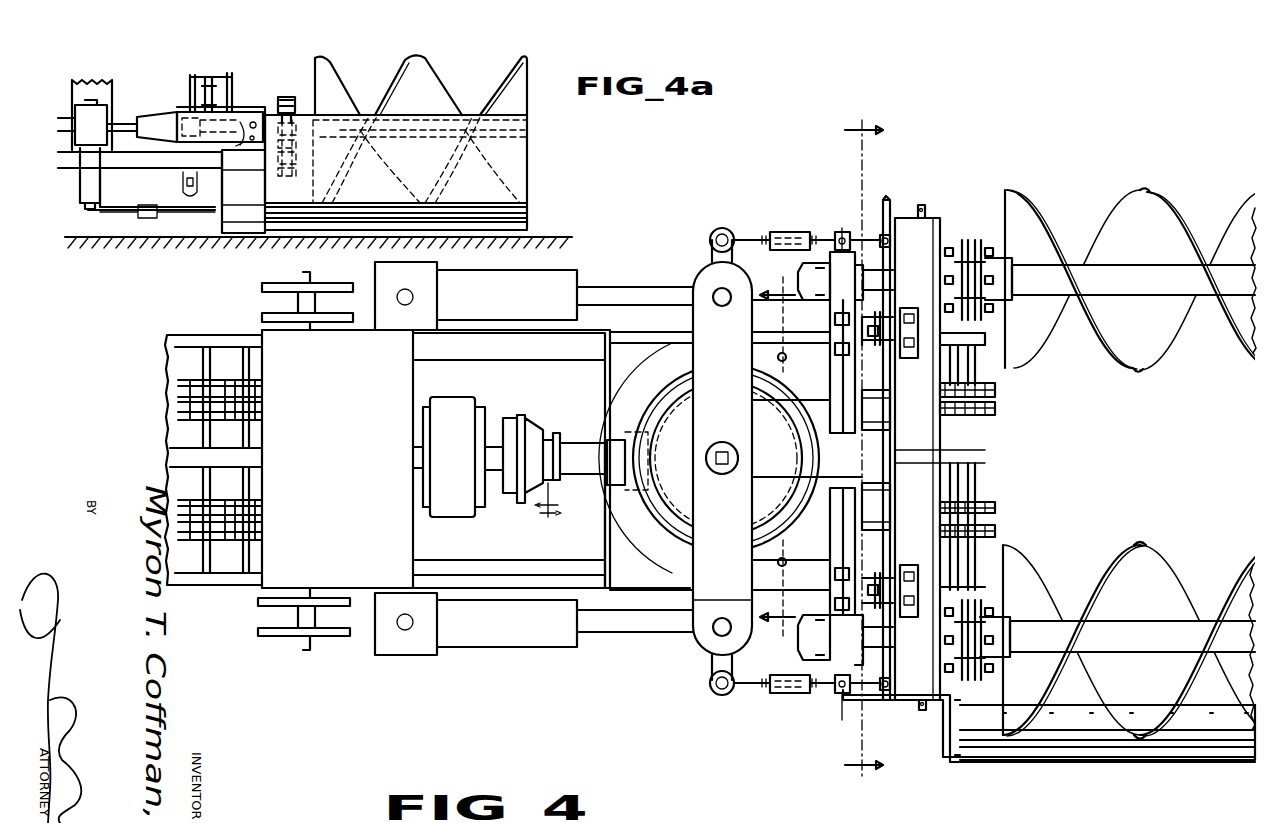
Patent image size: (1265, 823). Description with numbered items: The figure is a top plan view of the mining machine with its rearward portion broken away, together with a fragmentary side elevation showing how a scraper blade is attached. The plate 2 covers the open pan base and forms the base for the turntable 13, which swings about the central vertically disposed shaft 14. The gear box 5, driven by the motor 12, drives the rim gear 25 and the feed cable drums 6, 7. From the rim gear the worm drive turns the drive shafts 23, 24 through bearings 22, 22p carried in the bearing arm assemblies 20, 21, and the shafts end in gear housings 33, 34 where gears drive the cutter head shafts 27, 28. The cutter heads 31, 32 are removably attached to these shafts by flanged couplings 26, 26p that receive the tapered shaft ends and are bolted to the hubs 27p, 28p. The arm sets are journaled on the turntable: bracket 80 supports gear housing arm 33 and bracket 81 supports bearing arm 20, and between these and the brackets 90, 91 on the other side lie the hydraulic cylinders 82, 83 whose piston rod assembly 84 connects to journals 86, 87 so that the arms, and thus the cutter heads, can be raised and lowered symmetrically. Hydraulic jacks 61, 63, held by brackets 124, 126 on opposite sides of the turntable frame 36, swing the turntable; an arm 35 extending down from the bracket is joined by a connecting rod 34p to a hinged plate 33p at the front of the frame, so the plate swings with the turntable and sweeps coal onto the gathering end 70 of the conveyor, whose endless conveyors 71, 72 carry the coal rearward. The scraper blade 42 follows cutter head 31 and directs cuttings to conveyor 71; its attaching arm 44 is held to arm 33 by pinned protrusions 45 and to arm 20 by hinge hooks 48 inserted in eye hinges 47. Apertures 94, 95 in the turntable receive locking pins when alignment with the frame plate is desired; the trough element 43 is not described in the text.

In FIG. 4, the plate 2 is at (638, 567).
In FIG. 4, the gear box 5 is at (321, 485).
In FIG. 4, the feed cable drum 6 is at (298, 630).
In FIG. 4, the feed cable drum 7 is at (268, 316).
In FIG. 4, the motor 12 is at (454, 467).
In FIG. 4A, the turntable 13 is at (137, 160).
In FIG. 4, the turntable 13 is at (677, 558).
In FIG. 4, the central vertically disposed shaft 14 is at (773, 454).
In FIG. 4A, the bearing arm assembly 20 is at (180, 98).
In FIG. 4, the bearing arm assembly 20 is at (830, 490).
In FIG. 4, the bearing arm assembly 21 is at (840, 368).
In FIG. 4, the bearing 22 is at (870, 495).
In FIG. 4, the bearing 22p is at (868, 432).
In FIG. 4, the drive shaft 23 is at (836, 510).
In FIG. 4, the drive shaft 24 is at (810, 418).
In FIG. 4, the rim gear 25 is at (672, 522).
In FIG. 4, the flanged coupling 26 is at (1002, 630).
In FIG. 4, the flanged coupling 26p is at (1005, 262).
In FIG. 4, the cutter head shaft 27 is at (880, 640).
In FIG. 4, the hub 27p is at (965, 625).
In FIG. 4, the cutter head shaft 28 is at (880, 282).
In FIG. 4, the hub 28p is at (960, 245).
In FIG. 4A, the cutter head 31 is at (446, 80).
In FIG. 4, the cutter head 31 is at (1137, 540).
In FIG. 4, the cutter head 32 is at (1138, 362).
In FIG. 4A, the gear housing arm 33 is at (276, 97).
In FIG. 4, the gear housing arm 33 is at (925, 486).
In FIG. 4, the hinged plate 33p is at (885, 218).
In FIG. 4, the gear housing arm 34 is at (930, 224).
In FIG. 4, the connecting rod 34p is at (750, 692).
In FIG. 4A, the arm 35 is at (86, 180).
In FIG. 4, the arm 35 is at (710, 690).
In FIG. 4A, the frame 36 is at (82, 90).
In FIG. 4, the frame 36 is at (735, 392).
In FIG. 4A, the scraper blade 42 is at (527, 165).
In FIG. 4A, the trough plate 43 is at (530, 224).
In FIG. 4, the trough plate 43 is at (1053, 710).
In FIG. 4A, the attaching arm 44 is at (205, 140).
In FIG. 4, the attaching arm 44 is at (942, 740).
In FIG. 4A, the protrusion 45 is at (247, 135).
In FIG. 4, the protrusion 45 is at (922, 205).
In FIG. 4A, the eye hinge 47 is at (168, 118).
In FIG. 4, the eye hinge 47 is at (828, 695).
In FIG. 4, the hinge hook 48 is at (1100, 742).
In FIG. 4, the hydraulic jack 61 is at (553, 644).
In FIG. 4, the hydraulic jack 63 is at (583, 303).
In FIG. 4, the gathering end of the conveyor 70 is at (1044, 448).
In FIG. 4, the endless conveyor 71 is at (998, 526).
In FIG. 4, the endless conveyor 72 is at (998, 400).
In FIG. 4A, the bracket 80 is at (240, 108).
In FIG. 4, the bracket 80 is at (909, 565).
In FIG. 4A, the bracket 81 is at (193, 75).
In FIG. 4, the bracket 81 is at (838, 588).
In FIG. 4, the hydraulic cylinder 82 is at (865, 585).
In FIG. 4, the hydraulic cylinder 83 is at (866, 342).
In FIG. 4A, the piston rod assembly 84 is at (210, 76).
In FIG. 4, the journal 86 is at (845, 622).
In FIG. 4, the journal 87 is at (878, 322).
In FIG. 4, the bracket 90 is at (908, 362).
In FIG. 4, the bracket 91 is at (840, 372).
In FIG. 4, the aperture 94 is at (777, 562).
In FIG. 4, the aperture 95 is at (785, 356).
In FIG. 4, the bracket 124 is at (693, 276).
In FIG. 4, the bracket 126 is at (698, 642).